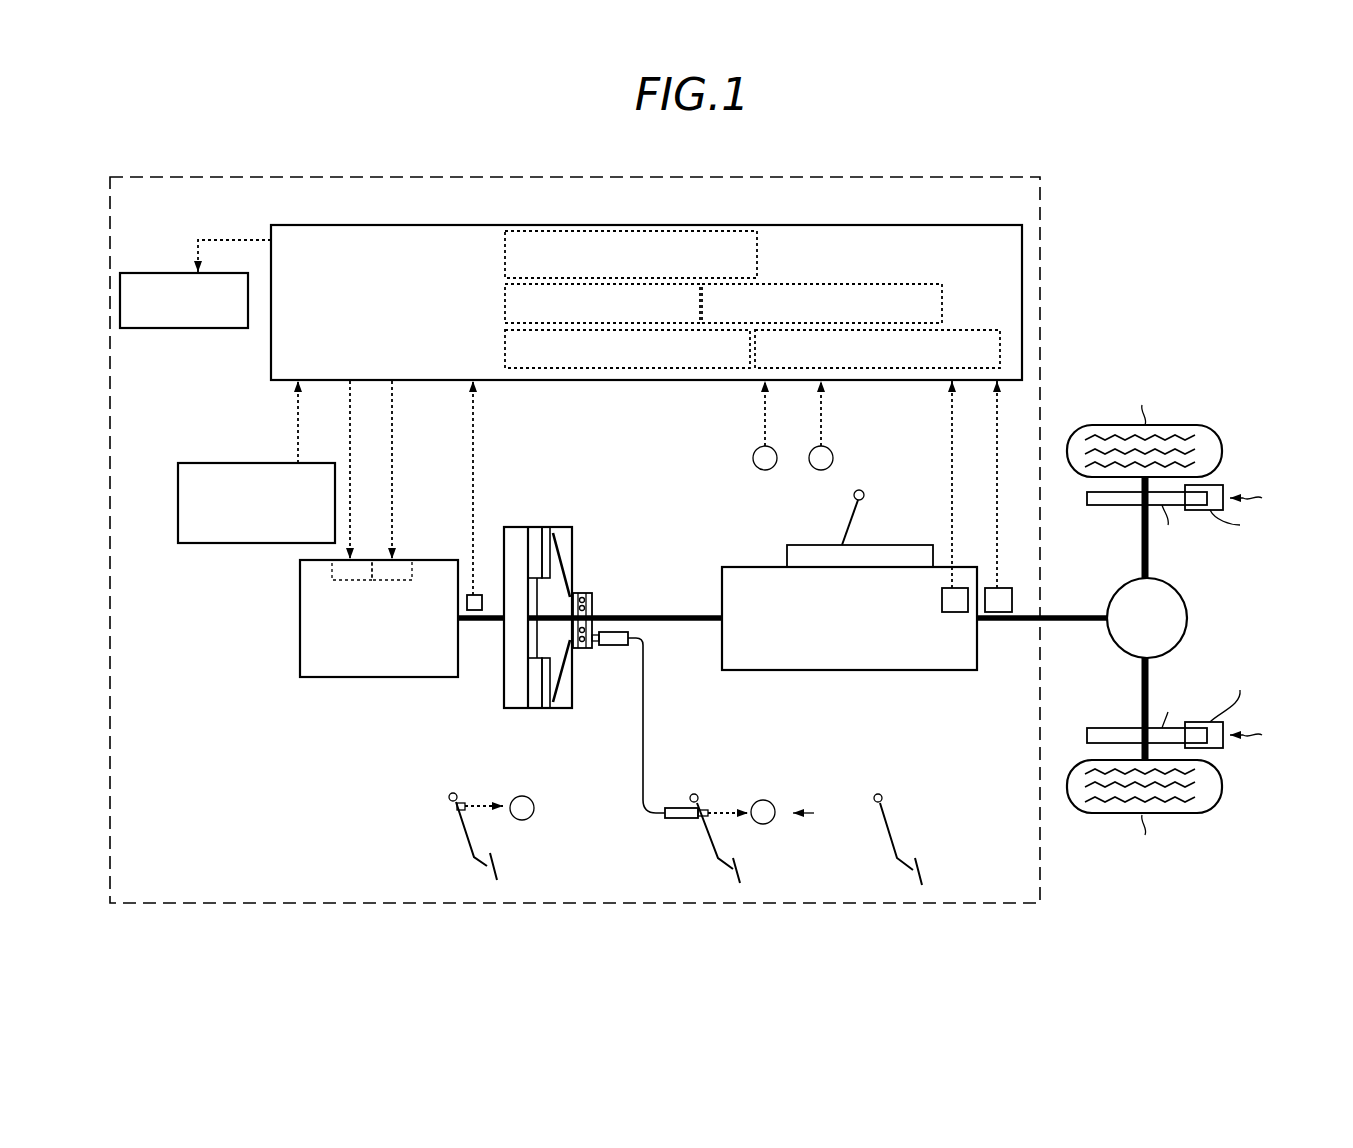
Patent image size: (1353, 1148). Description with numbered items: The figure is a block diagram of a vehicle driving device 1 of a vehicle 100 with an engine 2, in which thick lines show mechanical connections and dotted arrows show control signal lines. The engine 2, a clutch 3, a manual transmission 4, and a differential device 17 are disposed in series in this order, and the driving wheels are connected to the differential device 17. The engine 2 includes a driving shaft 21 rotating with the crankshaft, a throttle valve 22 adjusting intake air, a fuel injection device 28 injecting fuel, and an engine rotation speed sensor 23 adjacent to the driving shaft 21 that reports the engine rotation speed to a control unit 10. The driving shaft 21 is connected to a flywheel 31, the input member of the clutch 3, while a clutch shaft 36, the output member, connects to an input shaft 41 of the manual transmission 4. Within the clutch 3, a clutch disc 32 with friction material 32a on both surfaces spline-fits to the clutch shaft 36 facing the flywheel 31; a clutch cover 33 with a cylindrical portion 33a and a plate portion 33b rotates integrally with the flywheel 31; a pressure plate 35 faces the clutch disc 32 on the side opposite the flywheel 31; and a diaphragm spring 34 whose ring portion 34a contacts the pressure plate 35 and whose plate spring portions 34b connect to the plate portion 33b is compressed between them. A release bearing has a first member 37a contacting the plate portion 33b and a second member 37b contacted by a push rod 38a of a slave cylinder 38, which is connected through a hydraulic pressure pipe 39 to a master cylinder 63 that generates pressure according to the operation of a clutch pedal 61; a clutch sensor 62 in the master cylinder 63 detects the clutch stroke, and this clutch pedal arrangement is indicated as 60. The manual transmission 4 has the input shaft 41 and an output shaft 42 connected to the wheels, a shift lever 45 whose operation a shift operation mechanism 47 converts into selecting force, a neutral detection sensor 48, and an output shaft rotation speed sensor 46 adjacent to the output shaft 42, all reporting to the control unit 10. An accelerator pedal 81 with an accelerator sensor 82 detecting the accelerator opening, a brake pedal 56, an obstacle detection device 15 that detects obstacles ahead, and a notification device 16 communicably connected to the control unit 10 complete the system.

The vehicle driving device 1 is at (540, 176).
The vehicle 100 is at (1102, 322).
The control unit 10 is at (425, 225).
The notification device 16 is at (166, 273).
The obstacle detection device 15 is at (239, 463).
The engine 2 is at (334, 678).
The fuel injection device 28 is at (356, 567).
The throttle valve 22 is at (398, 567).
The engine rotation speed sensor 23 is at (476, 594).
The driving shaft 21 is at (474, 622).
The clutch 3 is at (518, 499).
The flywheel 31 is at (504, 688).
The clutch disc 32 is at (547, 708).
The friction material 32a is at (532, 708).
The clutch cover 33 is at (538, 505).
The cylindrical portion 33a is at (562, 714).
The plate portion 33b is at (567, 690).
The diaphragm spring 34 is at (570, 552).
The ring portion 34a is at (566, 556).
The plate spring portion 34b is at (572, 556).
The pressure plate 35 is at (547, 540).
The clutch shaft 36 is at (630, 628).
The first member 37a is at (588, 592).
The second member 37b is at (595, 605).
The slave cylinder 38 is at (610, 646).
The push rod 38a is at (596, 643).
The hydraulic pressure pipe 39 is at (647, 733).
The input shaft 41 is at (661, 612).
The manual transmission 4 is at (857, 671).
The shift lever 45 is at (847, 515).
The shift operation mechanism 47 is at (787, 560).
The neutral detection sensor 48 is at (957, 588).
The output shaft rotation speed sensor 46 is at (1000, 588).
The output shaft 42 is at (1005, 624).
The differential device 17 is at (1138, 577).
The clutch pedal device 60 is at (731, 762).
The clutch pedal 61 is at (712, 852).
The clutch sensor 62 is at (713, 812).
The master cylinder 63 is at (678, 808).
The accelerator pedal 81 is at (470, 852).
The accelerator sensor 82 is at (467, 812).
The brake pedal 56 is at (895, 855).